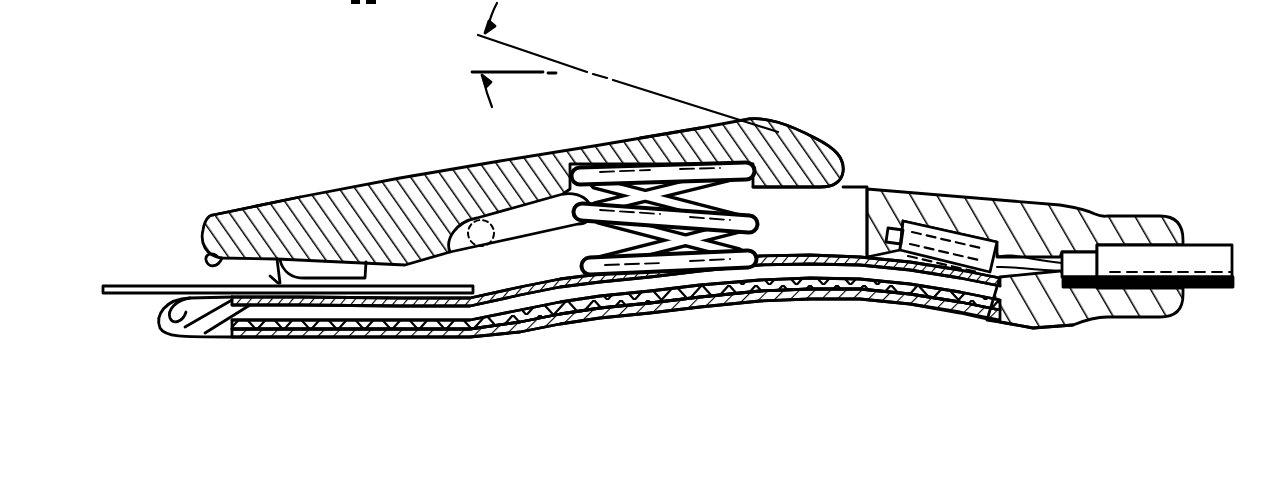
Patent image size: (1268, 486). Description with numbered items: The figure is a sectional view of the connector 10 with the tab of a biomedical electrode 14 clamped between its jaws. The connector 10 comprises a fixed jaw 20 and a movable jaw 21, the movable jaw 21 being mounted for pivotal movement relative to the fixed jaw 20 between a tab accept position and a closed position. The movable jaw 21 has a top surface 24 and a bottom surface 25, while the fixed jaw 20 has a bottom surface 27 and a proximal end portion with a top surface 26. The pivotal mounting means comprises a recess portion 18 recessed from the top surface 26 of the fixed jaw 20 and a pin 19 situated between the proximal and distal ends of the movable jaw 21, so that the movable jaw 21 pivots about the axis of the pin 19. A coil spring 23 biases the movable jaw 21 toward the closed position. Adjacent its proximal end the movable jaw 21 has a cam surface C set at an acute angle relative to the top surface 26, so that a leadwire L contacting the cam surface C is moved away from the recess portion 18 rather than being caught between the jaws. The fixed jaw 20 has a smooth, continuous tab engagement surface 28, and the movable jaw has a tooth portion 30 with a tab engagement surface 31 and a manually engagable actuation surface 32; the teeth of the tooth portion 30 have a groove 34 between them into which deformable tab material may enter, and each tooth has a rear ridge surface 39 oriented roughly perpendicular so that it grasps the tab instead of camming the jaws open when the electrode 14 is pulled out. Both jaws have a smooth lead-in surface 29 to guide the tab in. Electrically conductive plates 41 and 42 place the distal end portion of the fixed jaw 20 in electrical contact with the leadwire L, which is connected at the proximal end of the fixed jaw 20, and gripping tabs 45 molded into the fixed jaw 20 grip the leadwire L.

The connector 10 is at (848, 82).
The biomedical electrode 14 is at (127, 281).
The recess portion 18 is at (840, 198).
The pin 19 is at (513, 247).
The fixed jaw 20 is at (475, 333).
The movable jaw 21 is at (403, 166).
The coil spring 23 is at (670, 288).
The top surface 24 is at (771, 128).
The bottom surface 25 is at (809, 190).
The top surface 26 is at (900, 187).
The bottom surface 27 is at (384, 337).
The tab engagement surface 28 is at (323, 299).
The lead-in surface 29 is at (163, 308).
The tooth portion 30 is at (240, 209).
The tab engagement surface 31 is at (300, 262).
The manually engagable actuation surface 32 is at (690, 118).
The groove 34 is at (273, 278).
The rear ridge surface 39 is at (284, 257).
The conductive plate 41 is at (557, 288).
The conductive plate 42 is at (607, 294).
The gripping tabs 45 is at (960, 263).
The cam surface C is at (557, 60).
The leadwire L is at (1215, 260).